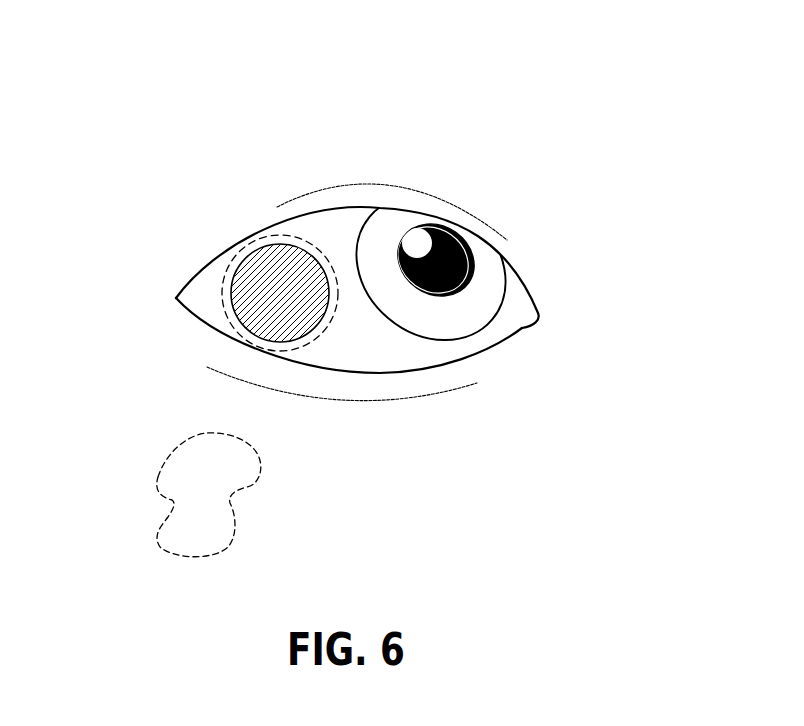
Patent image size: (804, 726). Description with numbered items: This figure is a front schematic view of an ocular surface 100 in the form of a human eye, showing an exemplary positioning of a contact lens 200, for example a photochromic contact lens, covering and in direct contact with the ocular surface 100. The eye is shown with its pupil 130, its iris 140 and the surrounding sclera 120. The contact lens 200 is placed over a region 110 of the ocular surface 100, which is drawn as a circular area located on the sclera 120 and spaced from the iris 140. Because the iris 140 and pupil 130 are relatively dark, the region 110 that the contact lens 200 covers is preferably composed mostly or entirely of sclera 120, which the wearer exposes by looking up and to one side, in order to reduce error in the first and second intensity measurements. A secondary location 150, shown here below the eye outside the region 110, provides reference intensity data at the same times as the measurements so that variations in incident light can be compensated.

The ocular surface 100 is at (487, 132).
The region 110 is at (222, 293).
The sclera 120 is at (405, 355).
The pupil 130 is at (472, 265).
The iris 140 is at (480, 302).
The secondary location 150 is at (215, 490).
The contact lens 200 is at (273, 267).